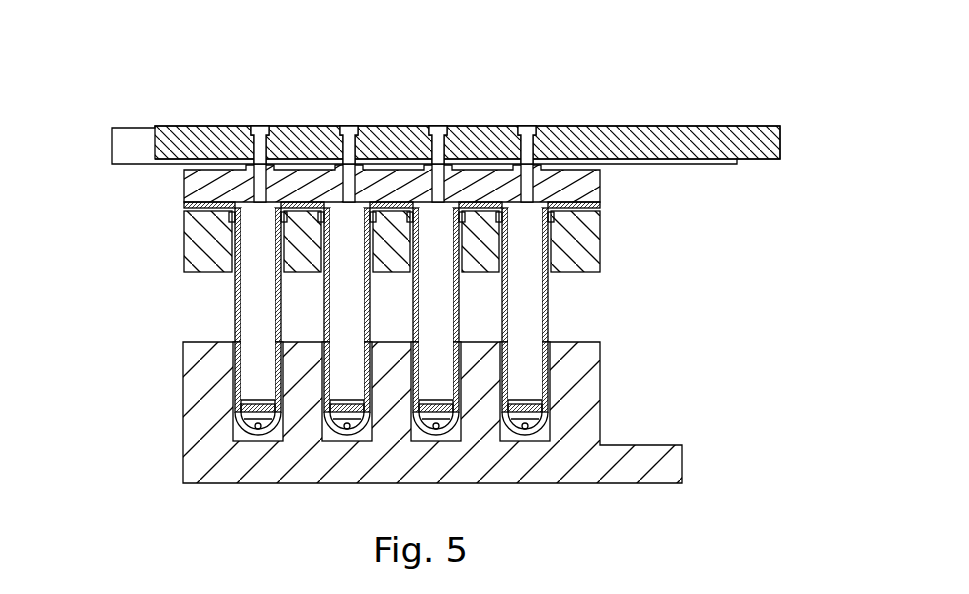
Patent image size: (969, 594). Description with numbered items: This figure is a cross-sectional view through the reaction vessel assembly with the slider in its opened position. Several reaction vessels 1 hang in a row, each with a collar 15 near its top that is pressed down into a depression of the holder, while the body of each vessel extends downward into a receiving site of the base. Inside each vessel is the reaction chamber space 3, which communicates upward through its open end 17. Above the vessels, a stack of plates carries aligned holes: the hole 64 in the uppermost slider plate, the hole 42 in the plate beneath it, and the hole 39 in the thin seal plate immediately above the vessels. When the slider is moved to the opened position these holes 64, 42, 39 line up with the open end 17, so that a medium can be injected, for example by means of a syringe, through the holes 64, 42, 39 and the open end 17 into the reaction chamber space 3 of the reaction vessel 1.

The reaction vessel 1 is at (547, 311).
The reaction chamber space 3 is at (525, 369).
The collar 15 is at (237, 212).
The open end of the reaction chamber space 17 is at (590, 229).
The hole 39 is at (467, 206).
The hole 42 is at (525, 183).
The hole 64 is at (530, 127).